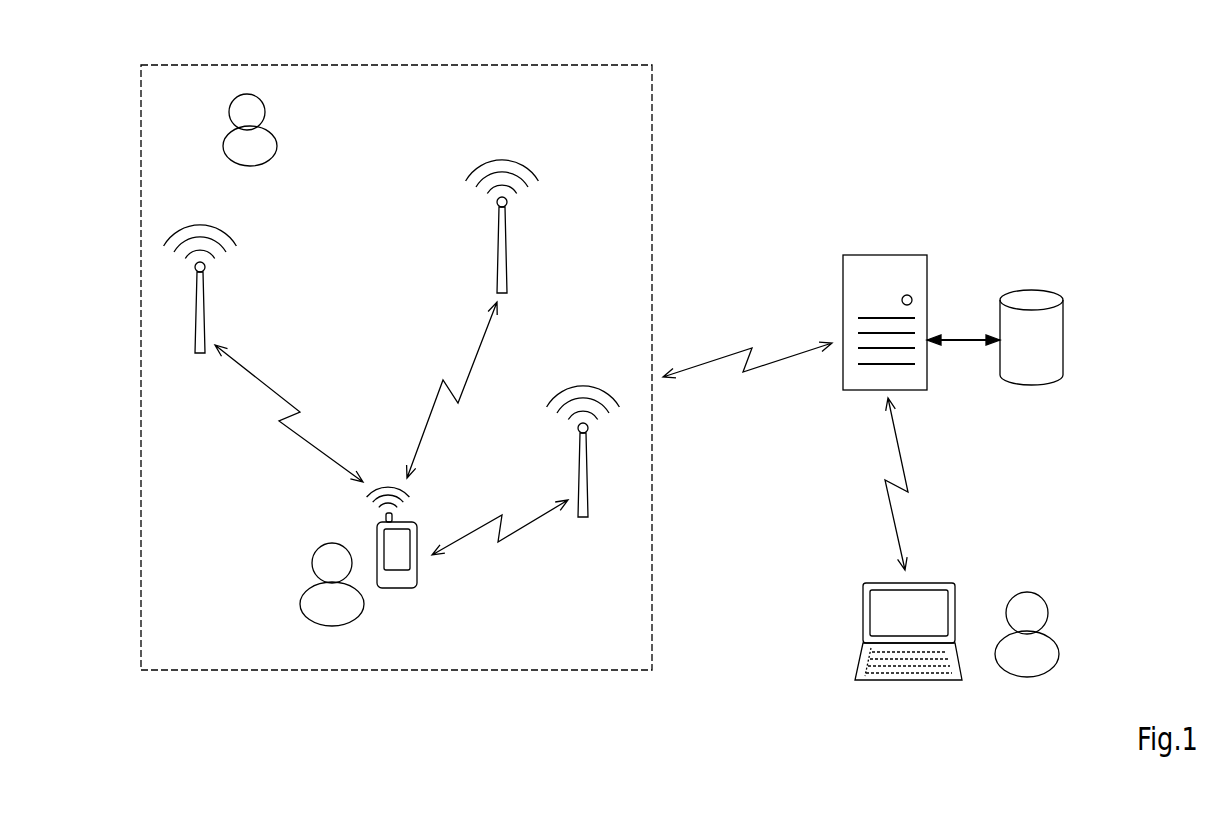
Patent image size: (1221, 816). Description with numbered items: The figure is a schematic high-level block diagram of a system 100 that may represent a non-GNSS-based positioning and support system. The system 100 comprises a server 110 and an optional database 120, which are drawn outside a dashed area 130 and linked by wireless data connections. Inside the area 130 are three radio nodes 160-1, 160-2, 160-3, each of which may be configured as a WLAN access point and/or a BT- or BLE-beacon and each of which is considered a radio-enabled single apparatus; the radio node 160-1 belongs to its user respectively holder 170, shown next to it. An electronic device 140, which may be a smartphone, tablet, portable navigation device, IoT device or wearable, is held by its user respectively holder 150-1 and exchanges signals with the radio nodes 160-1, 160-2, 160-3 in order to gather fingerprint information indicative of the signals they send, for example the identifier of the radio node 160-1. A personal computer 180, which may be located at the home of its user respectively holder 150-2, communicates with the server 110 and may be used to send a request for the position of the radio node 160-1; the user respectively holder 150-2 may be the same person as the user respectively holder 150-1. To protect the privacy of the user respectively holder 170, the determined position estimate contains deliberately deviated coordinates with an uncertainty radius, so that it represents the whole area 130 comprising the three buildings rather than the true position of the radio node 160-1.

The system 100 is at (1040, 115).
The server 110 is at (857, 322).
The database 120 is at (1062, 337).
The area 130 is at (427, 367).
The electronic device 140 is at (399, 564).
The user respectively holder 150-1 is at (291, 584).
The user respectively holder 150-2 is at (1070, 634).
The radio node 160-1 is at (227, 289).
The radio node 160-2 is at (475, 226).
The radio node 160-3 is at (556, 451).
The user respectively holder 170 is at (220, 130).
The personal computer 180 is at (882, 629).